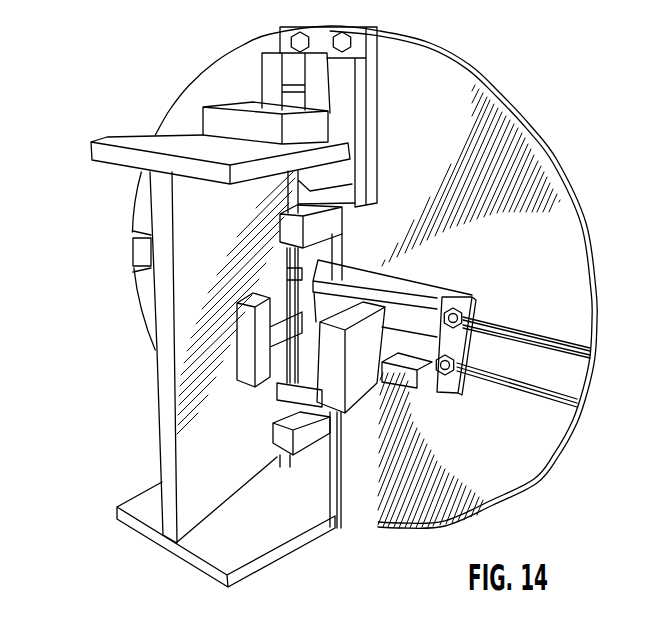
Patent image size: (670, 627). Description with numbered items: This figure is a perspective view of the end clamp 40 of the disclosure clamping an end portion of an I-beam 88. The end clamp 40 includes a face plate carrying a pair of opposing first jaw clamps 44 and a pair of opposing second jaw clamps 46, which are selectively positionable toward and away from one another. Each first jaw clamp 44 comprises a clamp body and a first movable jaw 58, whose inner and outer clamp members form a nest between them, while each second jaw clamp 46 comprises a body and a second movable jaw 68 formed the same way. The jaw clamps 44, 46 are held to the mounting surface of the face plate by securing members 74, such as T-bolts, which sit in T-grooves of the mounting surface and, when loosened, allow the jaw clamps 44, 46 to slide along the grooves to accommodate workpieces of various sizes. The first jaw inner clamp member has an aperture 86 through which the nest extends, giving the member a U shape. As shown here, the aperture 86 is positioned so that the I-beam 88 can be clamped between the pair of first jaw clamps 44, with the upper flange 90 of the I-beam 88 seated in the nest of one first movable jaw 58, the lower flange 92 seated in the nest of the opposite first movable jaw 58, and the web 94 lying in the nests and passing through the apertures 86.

The end clamp 40 is at (552, 161).
The first jaw clamp 44 is at (345, 92).
The second jaw clamp 46 is at (415, 380).
The first movable jaw 58 is at (203, 121).
The second movable jaw 68 is at (356, 348).
The securing member 74 is at (463, 364).
The aperture 86 is at (315, 401).
The I-beam 88 is at (173, 437).
The upper flange 90 is at (107, 152).
The lower flange 92 is at (241, 527).
The web 94 is at (192, 335).